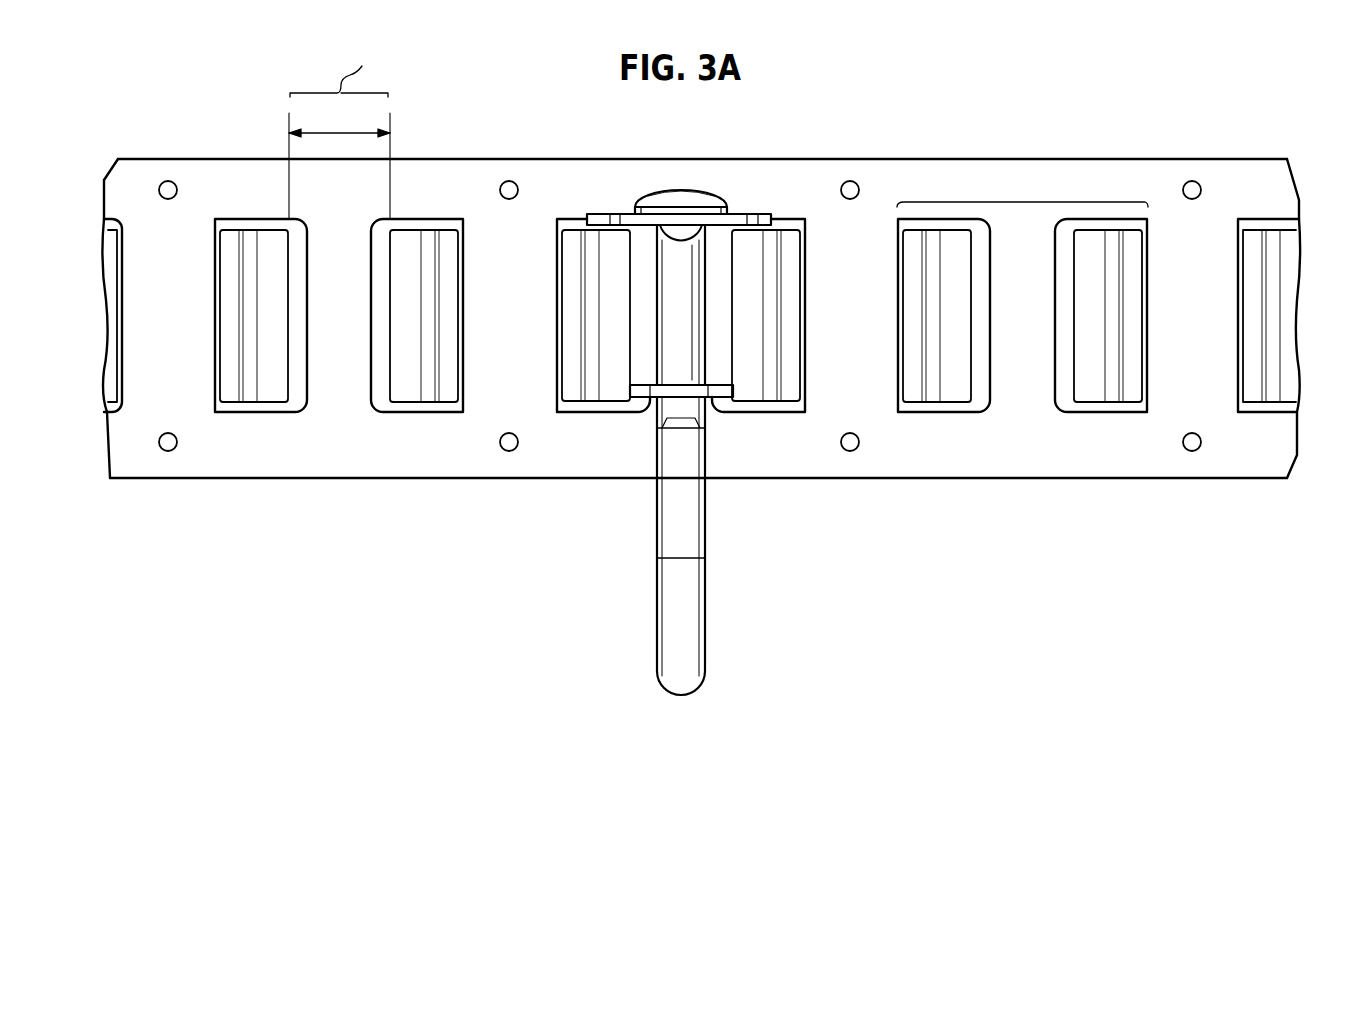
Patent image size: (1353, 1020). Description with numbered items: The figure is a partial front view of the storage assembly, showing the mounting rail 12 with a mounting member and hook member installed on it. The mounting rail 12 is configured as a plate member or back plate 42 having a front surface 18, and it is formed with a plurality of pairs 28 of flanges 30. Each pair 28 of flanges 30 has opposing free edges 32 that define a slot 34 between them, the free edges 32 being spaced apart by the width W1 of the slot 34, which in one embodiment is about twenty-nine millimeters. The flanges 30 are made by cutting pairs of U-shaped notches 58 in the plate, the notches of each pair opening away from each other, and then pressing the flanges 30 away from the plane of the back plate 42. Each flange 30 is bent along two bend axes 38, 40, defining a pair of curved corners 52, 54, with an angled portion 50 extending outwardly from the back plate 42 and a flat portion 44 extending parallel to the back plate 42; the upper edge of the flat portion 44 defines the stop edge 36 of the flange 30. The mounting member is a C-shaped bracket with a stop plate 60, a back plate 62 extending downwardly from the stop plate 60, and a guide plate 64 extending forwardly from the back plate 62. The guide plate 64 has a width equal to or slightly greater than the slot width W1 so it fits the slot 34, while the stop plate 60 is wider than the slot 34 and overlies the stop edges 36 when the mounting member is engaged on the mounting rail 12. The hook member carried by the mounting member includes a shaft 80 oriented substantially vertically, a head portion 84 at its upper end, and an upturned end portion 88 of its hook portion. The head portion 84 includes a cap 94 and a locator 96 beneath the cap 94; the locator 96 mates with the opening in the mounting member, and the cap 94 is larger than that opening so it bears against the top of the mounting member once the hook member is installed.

The mounting rail 12 is at (628, 173).
The front surface 18 is at (1093, 466).
The pairs of flanges 28 is at (1023, 202).
The flange 30 is at (617, 366).
The free edge 32 is at (563, 408).
The slot 34 is at (339, 71).
The stop edge 36 is at (272, 238).
The bend axis 38 is at (215, 412).
The bend axis 40 is at (248, 412).
The back plate 42 is at (582, 165).
The flat portion 44 is at (406, 380).
The angled portion 50 is at (233, 385).
The curved corner 52 is at (213, 240).
The curved corner 54 is at (238, 242).
The U-shaped notch 58 is at (403, 240).
The stop plate 60 is at (700, 220).
The back plate 62 is at (684, 362).
The guide plate 64 is at (658, 418).
The shaft 80 is at (725, 392).
The head portion 84 is at (688, 200).
The end portion 88 is at (683, 538).
The cap 94 is at (670, 190).
The locator 96 is at (702, 233).
The slot width W1 is at (338, 131).